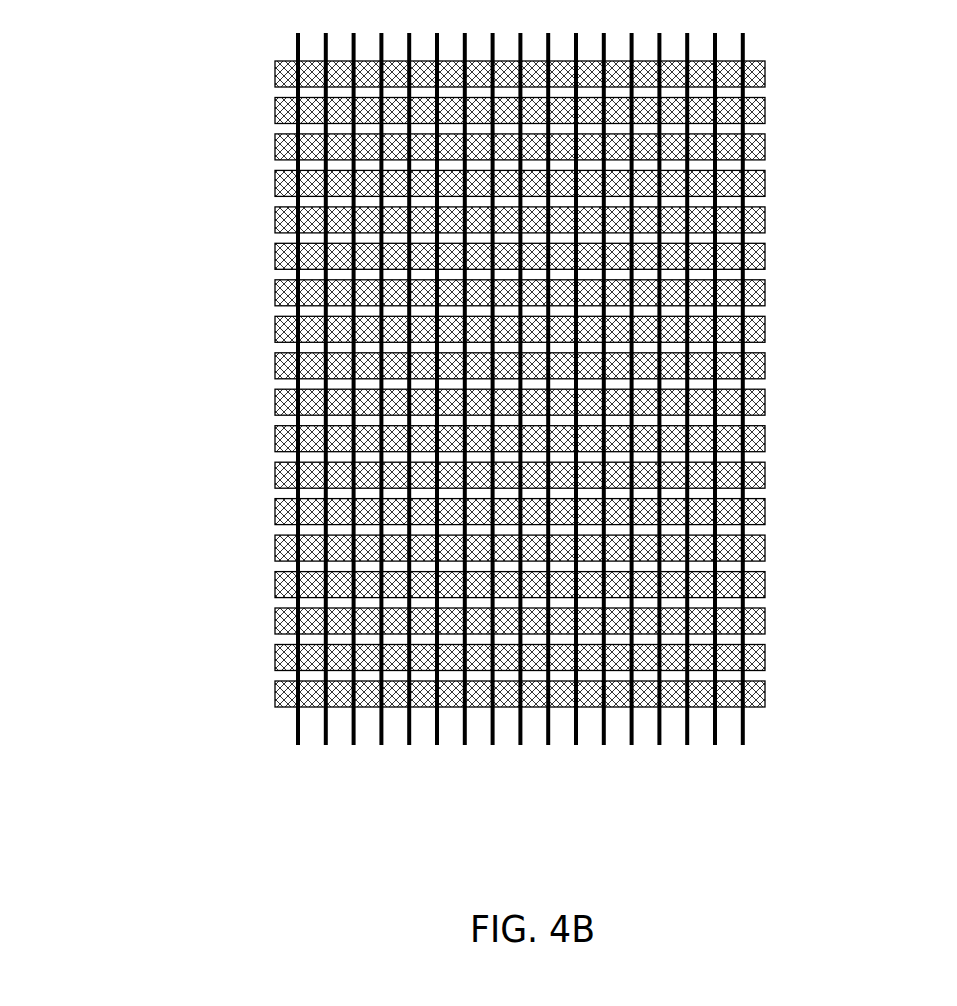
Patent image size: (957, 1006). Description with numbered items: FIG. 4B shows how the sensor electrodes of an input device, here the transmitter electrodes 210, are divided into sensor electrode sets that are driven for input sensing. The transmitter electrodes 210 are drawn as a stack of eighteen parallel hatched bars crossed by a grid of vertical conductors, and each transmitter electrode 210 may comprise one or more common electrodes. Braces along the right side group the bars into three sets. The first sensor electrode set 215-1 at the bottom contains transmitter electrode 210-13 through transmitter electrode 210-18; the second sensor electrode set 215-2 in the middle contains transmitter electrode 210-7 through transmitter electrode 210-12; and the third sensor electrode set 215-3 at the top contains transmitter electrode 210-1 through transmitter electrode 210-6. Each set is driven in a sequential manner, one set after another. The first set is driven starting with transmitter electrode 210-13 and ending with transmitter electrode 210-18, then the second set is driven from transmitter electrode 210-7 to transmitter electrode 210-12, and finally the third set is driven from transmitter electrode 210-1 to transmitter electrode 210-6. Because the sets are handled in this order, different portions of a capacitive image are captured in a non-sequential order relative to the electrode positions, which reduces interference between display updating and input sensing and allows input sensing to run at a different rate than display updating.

The transmitter electrodes 210 is at (94, 715).
The transmitter electrode 210-1 is at (275, 73).
The transmitter electrode 210-6 is at (275, 257).
The transmitter electrode 210-7 is at (275, 293).
The transmitter electrode 210-12 is at (275, 475).
The transmitter electrode 210-13 is at (275, 512).
The transmitter electrode 210-18 is at (275, 694).
The first sensor electrode set 215-1 is at (783, 717).
The second sensor electrode set 215-2 is at (783, 270).
The third sensor electrode set 215-3 is at (783, 270).